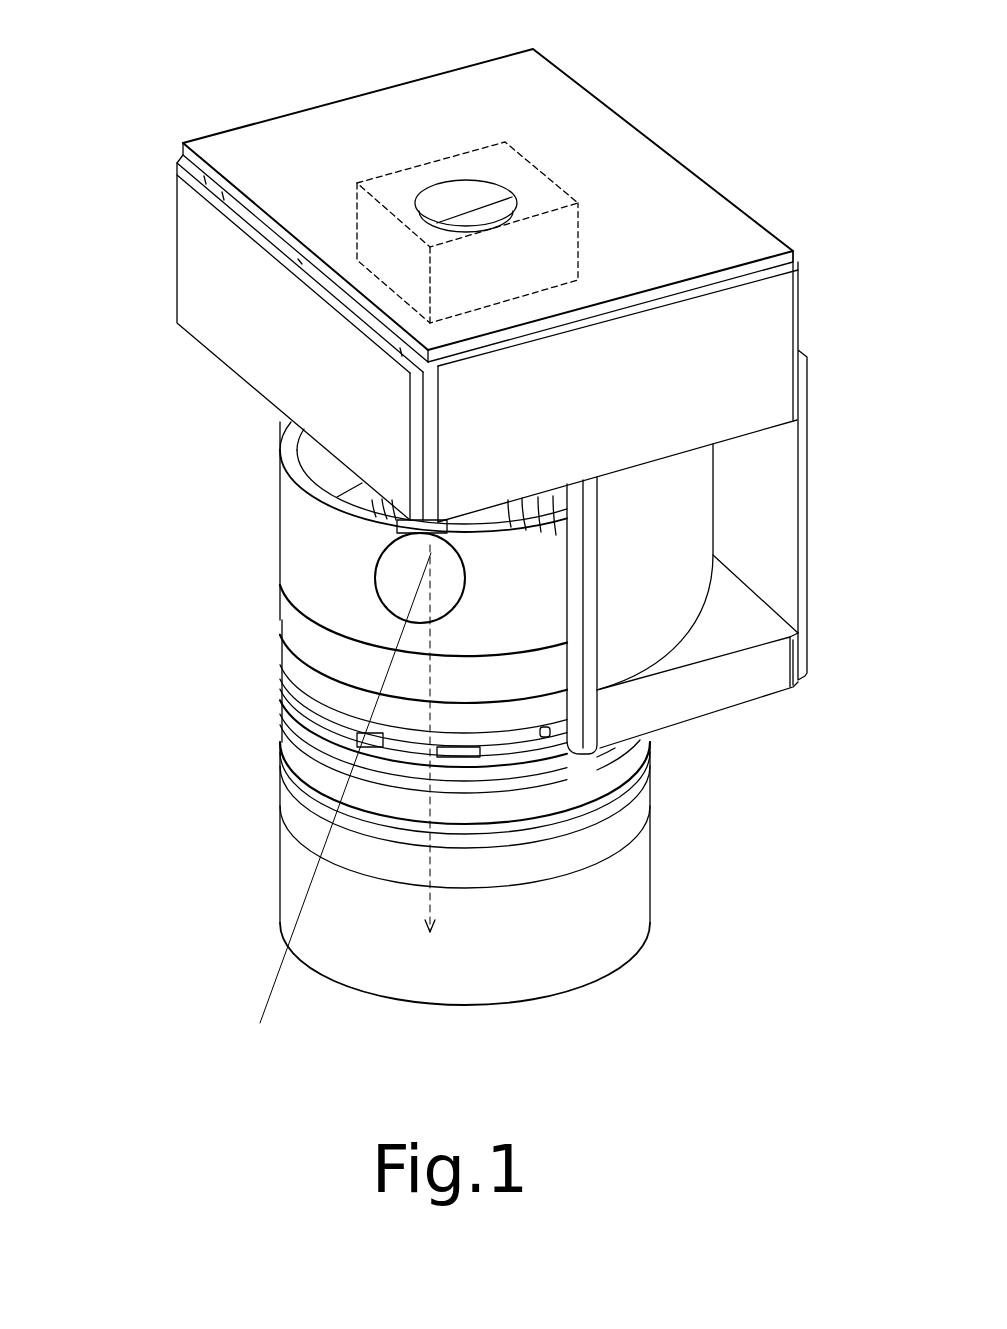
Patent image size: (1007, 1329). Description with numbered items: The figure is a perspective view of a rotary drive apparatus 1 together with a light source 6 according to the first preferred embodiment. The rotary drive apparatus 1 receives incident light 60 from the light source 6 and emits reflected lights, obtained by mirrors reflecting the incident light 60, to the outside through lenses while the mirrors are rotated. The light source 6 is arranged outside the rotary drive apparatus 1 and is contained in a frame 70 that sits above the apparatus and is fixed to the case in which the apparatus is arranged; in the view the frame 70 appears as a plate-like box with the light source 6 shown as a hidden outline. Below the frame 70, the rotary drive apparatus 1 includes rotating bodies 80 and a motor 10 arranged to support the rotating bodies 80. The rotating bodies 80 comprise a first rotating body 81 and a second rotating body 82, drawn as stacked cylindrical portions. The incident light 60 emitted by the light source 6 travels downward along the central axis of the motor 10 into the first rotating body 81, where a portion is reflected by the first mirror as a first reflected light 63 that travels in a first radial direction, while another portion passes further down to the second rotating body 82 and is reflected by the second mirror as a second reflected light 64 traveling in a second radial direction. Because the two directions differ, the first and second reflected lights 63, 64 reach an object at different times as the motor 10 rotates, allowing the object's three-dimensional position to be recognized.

The rotary drive apparatus 1 is at (103, 508).
The light source 6 is at (397, 193).
The motor 10 is at (268, 716).
The incident light 60 is at (430, 907).
The first reflected light 63 is at (323, 808).
The second reflected light 64 is at (657, 873).
The frame 70 is at (708, 243).
The rotating bodies 80 is at (436, 750).
The first rotating body 81 is at (265, 545).
The second rotating body 82 is at (665, 918).